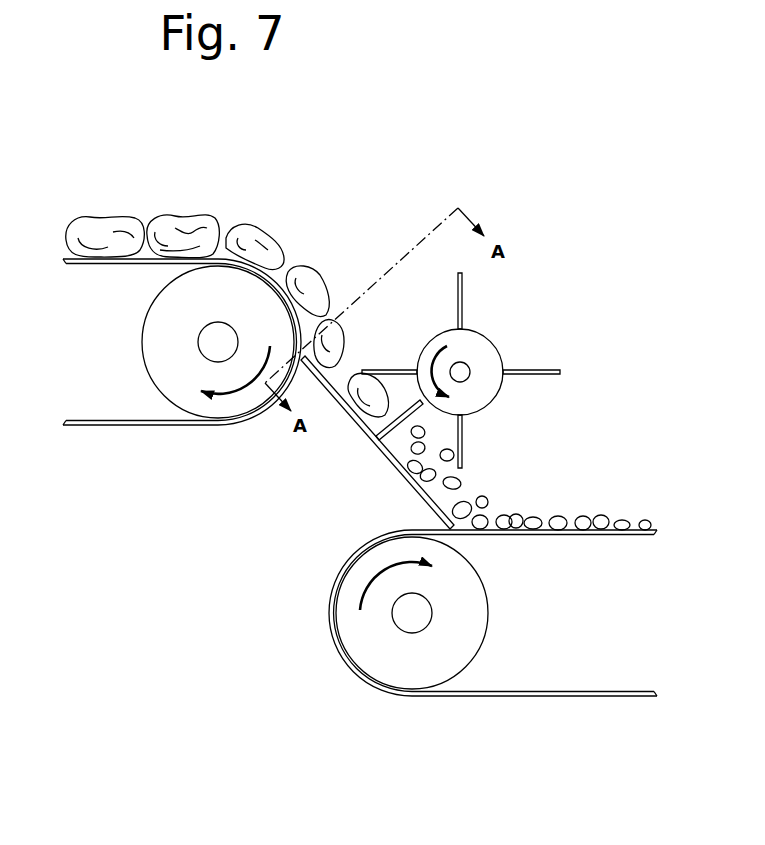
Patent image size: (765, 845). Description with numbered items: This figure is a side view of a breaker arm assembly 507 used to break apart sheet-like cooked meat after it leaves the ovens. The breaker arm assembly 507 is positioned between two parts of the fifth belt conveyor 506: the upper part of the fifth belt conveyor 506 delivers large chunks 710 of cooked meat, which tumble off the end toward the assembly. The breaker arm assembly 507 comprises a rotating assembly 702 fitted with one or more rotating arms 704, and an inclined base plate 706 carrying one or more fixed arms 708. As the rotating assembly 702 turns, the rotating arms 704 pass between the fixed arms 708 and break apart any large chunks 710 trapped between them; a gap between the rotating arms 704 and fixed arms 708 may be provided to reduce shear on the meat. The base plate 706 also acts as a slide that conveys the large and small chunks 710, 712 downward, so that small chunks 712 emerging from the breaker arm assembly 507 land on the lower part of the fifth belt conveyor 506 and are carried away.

The fifth belt conveyor 506 is at (117, 425).
The breaker arm assembly 507 is at (510, 370).
The rotating assembly 702 is at (493, 402).
The rotating arms 704 is at (540, 375).
The base plate 706 is at (350, 413).
The fixed arms 708 is at (397, 440).
The large chunks 710 is at (217, 218).
The small chunks 712 is at (560, 518).